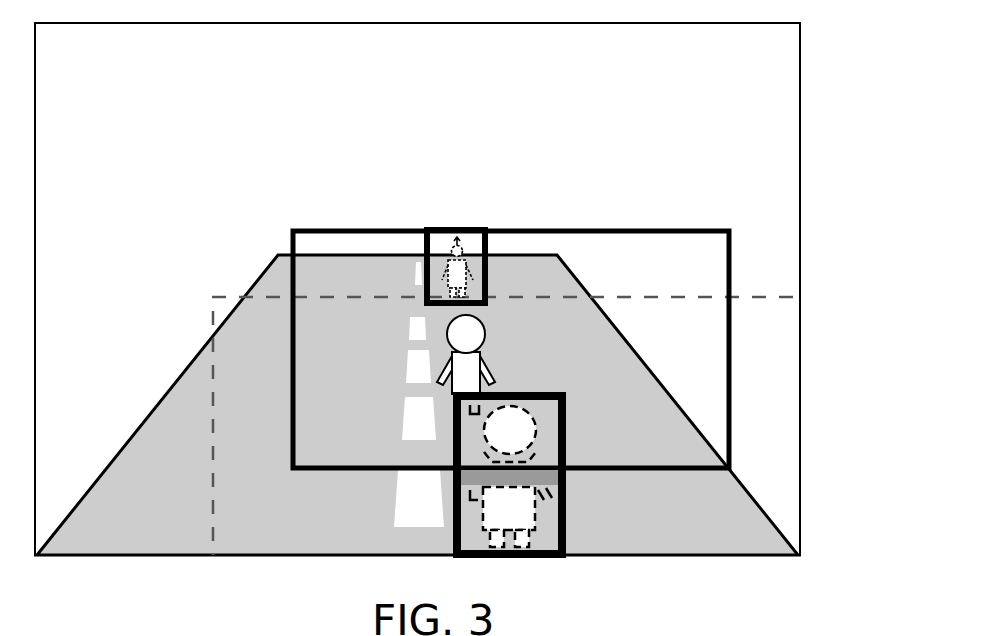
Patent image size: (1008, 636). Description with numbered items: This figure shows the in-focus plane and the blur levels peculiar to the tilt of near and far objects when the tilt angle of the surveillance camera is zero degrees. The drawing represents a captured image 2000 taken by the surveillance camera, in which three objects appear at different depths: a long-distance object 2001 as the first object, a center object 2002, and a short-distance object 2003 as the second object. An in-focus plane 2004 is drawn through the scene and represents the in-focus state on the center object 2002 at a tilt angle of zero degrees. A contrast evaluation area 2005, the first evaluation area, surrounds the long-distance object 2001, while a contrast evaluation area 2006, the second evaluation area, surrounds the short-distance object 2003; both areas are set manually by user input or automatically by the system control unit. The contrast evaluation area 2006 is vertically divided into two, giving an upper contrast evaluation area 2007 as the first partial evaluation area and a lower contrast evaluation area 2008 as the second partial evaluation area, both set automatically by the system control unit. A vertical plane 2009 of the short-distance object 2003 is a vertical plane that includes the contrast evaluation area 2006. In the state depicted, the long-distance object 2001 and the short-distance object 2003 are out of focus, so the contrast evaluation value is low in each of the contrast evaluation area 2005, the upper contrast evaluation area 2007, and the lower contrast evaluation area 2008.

The captured image 2000 is at (85, 23).
The long-distance object 2001 is at (458, 228).
The center object 2002 is at (470, 338).
The short-distance object 2003 is at (579, 460).
The in-focus plane 2004 is at (640, 230).
The contrast evaluation area 2005 is at (490, 257).
The contrast evaluation area 2006 is at (523, 392).
The upper contrast evaluation area 2007 is at (547, 460).
The lower contrast evaluation area 2008 is at (547, 528).
The vertical plane 2009 is at (743, 297).